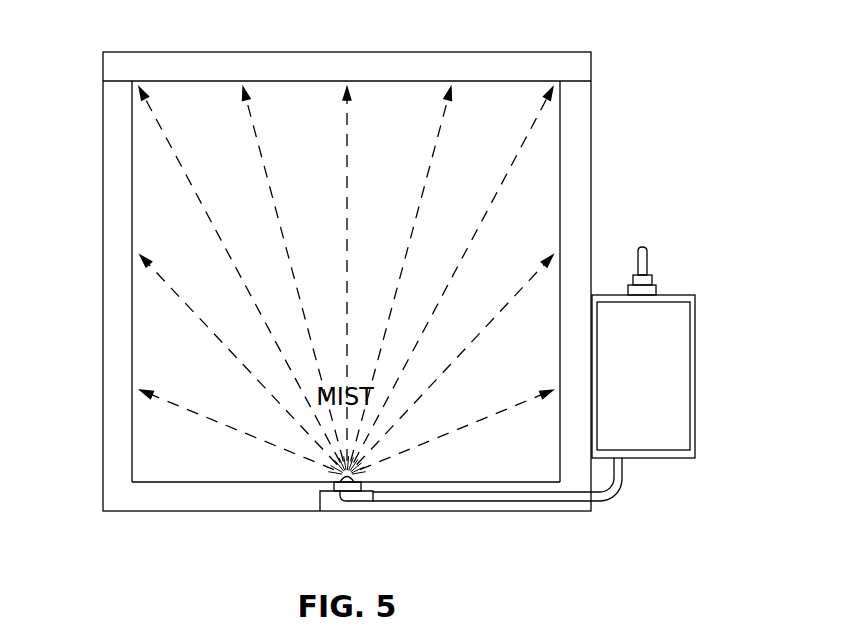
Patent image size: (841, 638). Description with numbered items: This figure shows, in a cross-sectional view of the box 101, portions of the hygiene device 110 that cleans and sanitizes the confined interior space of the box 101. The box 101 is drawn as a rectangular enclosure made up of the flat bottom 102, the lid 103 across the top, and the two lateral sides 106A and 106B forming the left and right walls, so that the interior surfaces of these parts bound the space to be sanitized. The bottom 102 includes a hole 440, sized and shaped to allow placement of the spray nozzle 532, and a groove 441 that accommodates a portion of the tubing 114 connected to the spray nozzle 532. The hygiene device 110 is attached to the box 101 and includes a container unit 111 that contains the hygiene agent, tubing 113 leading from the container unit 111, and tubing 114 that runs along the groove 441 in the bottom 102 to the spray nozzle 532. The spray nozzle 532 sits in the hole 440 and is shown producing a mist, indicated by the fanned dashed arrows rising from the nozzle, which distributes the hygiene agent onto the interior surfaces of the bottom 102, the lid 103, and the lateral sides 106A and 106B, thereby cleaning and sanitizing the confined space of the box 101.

The box 101 is at (351, 49).
The bottom 102 is at (160, 497).
The lid 103 is at (574, 69).
The lateral side 106A is at (573, 190).
The lateral side 106B is at (119, 190).
The hygiene device 110 is at (703, 316).
The container unit 111 is at (673, 380).
The tubing 113 is at (652, 260).
The tubing 114 is at (626, 481).
The hole 440 is at (333, 485).
The groove 441 is at (476, 512).
The spray nozzle 532 is at (350, 488).